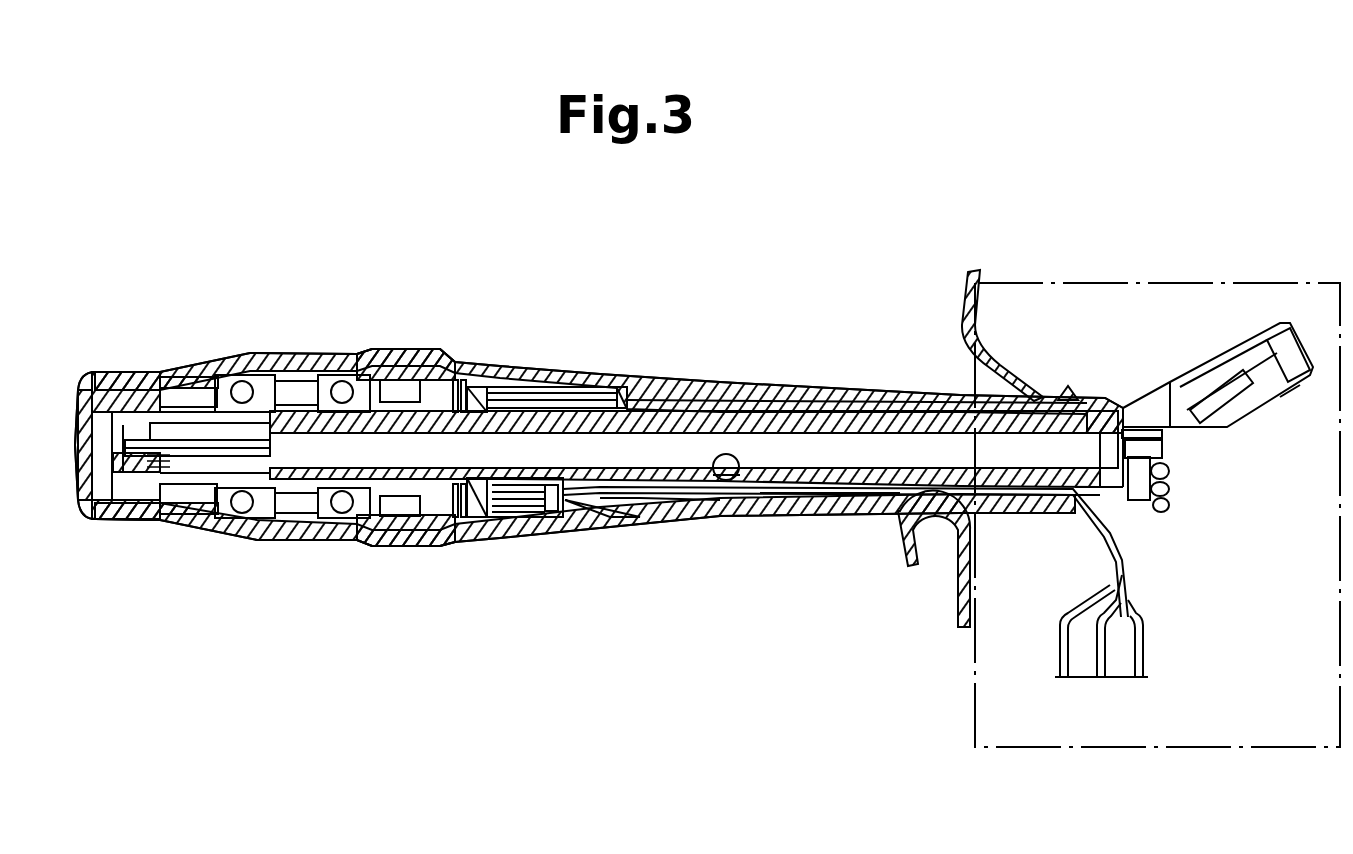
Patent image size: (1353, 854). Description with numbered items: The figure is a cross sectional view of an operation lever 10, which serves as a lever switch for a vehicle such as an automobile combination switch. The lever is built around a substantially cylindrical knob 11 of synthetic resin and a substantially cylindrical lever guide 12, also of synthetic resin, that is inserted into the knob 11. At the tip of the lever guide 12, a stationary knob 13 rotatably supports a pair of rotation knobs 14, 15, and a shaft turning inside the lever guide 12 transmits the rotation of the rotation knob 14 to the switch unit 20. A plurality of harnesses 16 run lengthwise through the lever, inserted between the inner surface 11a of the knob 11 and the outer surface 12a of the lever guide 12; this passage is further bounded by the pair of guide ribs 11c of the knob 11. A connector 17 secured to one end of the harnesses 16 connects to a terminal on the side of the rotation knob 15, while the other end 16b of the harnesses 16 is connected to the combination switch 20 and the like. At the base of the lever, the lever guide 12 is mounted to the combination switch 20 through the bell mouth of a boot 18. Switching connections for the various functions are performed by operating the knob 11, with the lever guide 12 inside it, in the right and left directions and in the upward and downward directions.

The operation lever 10 is at (561, 345).
The knob 11 is at (667, 379).
The inner surface of the knob 11a is at (733, 504).
The guide ribs 11c is at (1103, 505).
The lever guide 12 is at (814, 393).
The outer surface of the lever guide 12a is at (803, 501).
The stationary knob 13 is at (313, 354).
The rotation knob 14 is at (137, 358).
The rotation knob 15 is at (420, 348).
The harnesses 16 is at (600, 502).
The end of the harnesses 16b is at (1062, 642).
The connector 17 is at (551, 513).
The boot 18 is at (960, 308).
The combination switch 20 is at (1120, 283).